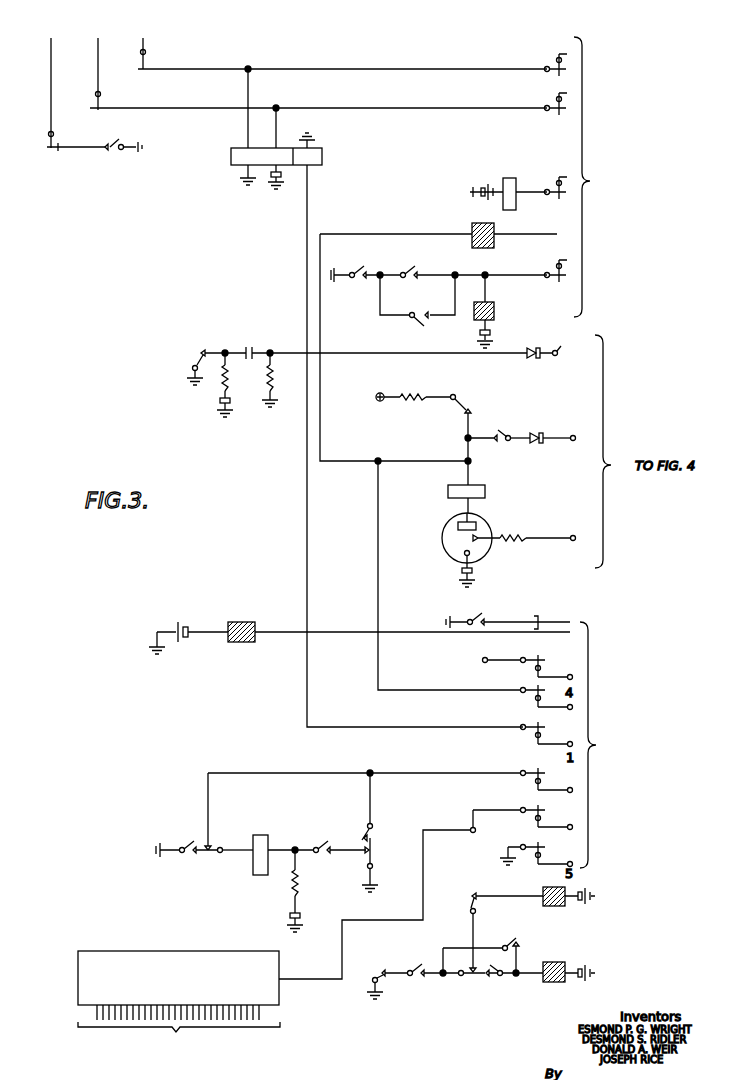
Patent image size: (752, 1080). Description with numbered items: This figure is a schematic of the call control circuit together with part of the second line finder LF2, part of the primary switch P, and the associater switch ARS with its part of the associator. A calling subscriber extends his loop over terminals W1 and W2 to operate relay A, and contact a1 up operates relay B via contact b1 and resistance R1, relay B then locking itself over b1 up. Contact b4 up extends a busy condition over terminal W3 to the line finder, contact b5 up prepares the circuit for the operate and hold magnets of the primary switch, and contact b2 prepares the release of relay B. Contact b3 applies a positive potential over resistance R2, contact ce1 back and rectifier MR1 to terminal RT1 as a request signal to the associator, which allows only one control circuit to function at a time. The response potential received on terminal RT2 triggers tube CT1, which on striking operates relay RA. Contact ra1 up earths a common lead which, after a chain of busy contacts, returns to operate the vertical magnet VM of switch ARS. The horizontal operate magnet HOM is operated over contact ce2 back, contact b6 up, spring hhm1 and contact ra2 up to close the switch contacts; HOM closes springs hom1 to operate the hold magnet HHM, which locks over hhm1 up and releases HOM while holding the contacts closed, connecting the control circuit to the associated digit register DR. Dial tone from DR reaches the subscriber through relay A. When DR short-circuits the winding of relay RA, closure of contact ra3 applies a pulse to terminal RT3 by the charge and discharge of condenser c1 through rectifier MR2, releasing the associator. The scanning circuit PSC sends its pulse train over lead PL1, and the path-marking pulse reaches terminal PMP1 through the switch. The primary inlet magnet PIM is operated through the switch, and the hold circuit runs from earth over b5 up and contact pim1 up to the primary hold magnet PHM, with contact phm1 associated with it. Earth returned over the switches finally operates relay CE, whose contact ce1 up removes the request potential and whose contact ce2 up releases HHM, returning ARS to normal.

The second line finder LF2 is at (97, 83).
The terminal W1 is at (352, 69).
The terminal W2 is at (328, 109).
The terminal W3 is at (76, 139).
The contact b4 is at (123, 138).
The relay A is at (342, 155).
The relay CE is at (515, 164).
The primary inlet magnet PIM is at (438, 340).
The contact b5 is at (365, 268).
The contact pim1 is at (472, 281).
The contact phm1 is at (417, 309).
The primary hold magnet PHM is at (501, 311).
The primary switch P is at (634, 177).
The contact ra3 is at (213, 375).
The condenser C1 c1 is at (384, 368).
The rectifier MR2 is at (534, 363).
The terminal RT3 is at (560, 349).
The resistance R2 is at (413, 388).
The contact ce1 is at (473, 439).
The contact b3 is at (499, 428).
The rectifier MR1 is at (546, 448).
The terminal RT1 is at (577, 436).
The relay RA is at (515, 490).
The tube CT1 is at (454, 550).
The terminal RT2 is at (538, 537).
The vertical magnet VM is at (359, 628).
The contact ra1 is at (508, 614).
The terminal PMP1 is at (488, 659).
The associater switch ARS is at (390, 779).
The lead PL1 is at (426, 892).
The digit register DR is at (633, 745).
The contact b1 is at (204, 815).
The relay B is at (270, 816).
The contact b2 is at (342, 841).
The contact a1 is at (378, 831).
The resistance R1 is at (305, 889).
The primary scanning circuit PSC is at (133, 949).
The contact ra2 is at (506, 932).
The horizontal operate magnet HOM is at (566, 907).
The springs hom1 is at (501, 950).
The contact ce2 is at (384, 972).
The contact b6 is at (434, 959).
The spring hhm1 is at (501, 981).
The hold magnet HHM is at (565, 985).